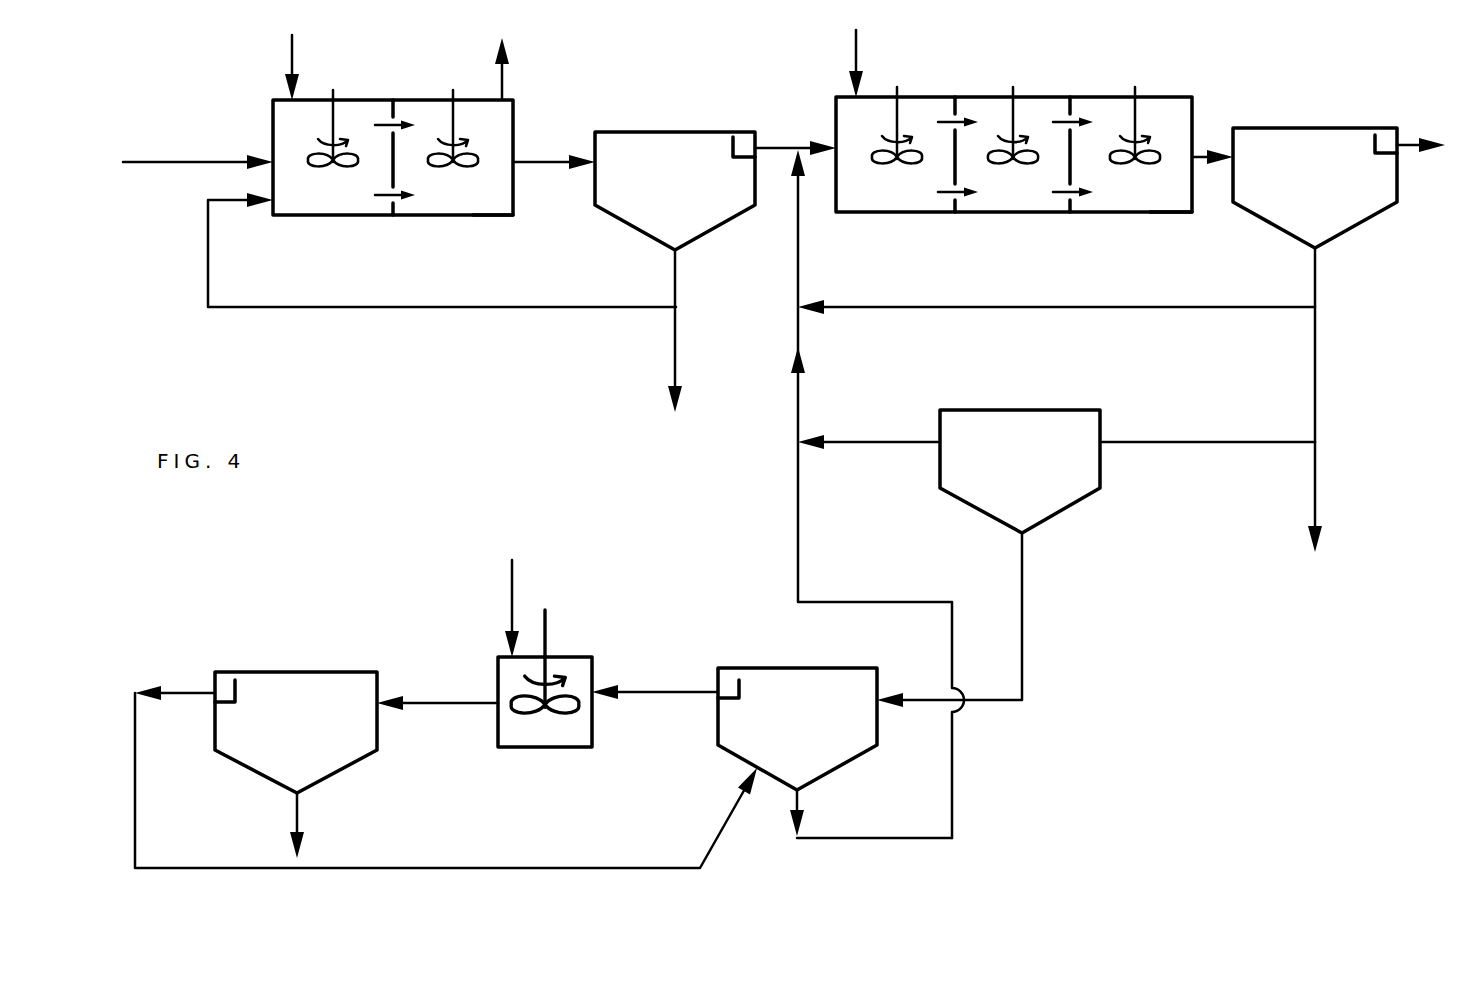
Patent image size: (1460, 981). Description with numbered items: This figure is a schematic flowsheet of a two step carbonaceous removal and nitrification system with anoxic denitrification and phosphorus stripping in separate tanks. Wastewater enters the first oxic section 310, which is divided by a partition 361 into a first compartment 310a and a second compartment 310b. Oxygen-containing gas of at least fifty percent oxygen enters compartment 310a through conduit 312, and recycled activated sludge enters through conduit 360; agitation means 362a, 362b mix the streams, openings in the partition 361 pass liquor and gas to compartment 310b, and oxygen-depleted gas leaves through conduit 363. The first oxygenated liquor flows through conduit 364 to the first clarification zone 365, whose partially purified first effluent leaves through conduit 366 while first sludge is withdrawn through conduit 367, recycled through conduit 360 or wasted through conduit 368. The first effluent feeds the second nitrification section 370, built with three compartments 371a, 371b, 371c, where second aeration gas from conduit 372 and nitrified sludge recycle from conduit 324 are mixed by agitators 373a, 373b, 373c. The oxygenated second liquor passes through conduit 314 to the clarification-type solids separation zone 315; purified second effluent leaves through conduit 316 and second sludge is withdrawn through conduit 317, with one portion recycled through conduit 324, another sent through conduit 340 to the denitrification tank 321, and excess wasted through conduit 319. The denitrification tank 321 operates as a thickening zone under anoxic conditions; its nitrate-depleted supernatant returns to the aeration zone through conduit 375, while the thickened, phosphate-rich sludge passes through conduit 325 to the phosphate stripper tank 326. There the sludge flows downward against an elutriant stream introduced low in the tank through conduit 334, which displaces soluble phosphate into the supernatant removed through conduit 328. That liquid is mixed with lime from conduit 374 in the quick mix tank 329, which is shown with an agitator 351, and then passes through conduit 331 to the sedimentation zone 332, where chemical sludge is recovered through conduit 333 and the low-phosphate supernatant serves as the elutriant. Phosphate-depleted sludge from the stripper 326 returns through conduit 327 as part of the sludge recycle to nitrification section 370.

The first oxic section 310 is at (393, 74).
The first compartment 310a is at (332, 217).
The second compartment 310b is at (434, 217).
The conduit 312 is at (293, 56).
The partition 361 is at (393, 146).
The agitation means 362a is at (333, 122).
The agitation means 362b is at (458, 148).
The conduit 363 is at (505, 83).
The conduit 364 is at (541, 163).
The first clarification zone 365 is at (723, 130).
The conduit 366 is at (774, 147).
The conduit 367 is at (677, 277).
The conduit 368 is at (675, 355).
The conduit 360 is at (208, 275).
The second nitrification section 370 is at (994, 76).
The first compartment 371a is at (871, 214).
The second compartment 371b is at (988, 214).
The third compartment 371c is at (1096, 214).
The conduit 372 is at (857, 54).
The agitator 373a is at (897, 128).
The agitator 373b is at (1015, 118).
The agitator 373c is at (1137, 115).
The conduit 314 is at (1203, 150).
The clarification-type solids separation zone 315 is at (1270, 229).
The conduit 316 is at (1406, 140).
The conduit 317 is at (1318, 286).
The conduit 319 is at (1316, 490).
The conduit 340 is at (1205, 441).
The denitrification tank 321 is at (1069, 409).
The conduit 375 is at (856, 441).
The conduit 324 is at (799, 262).
The conduit 325 is at (986, 699).
The phosphate stripper tank 326 is at (773, 778).
The conduit 327 is at (873, 838).
The conduit 328 is at (646, 693).
The quick mix tank 329 is at (552, 748).
The agitator 351 is at (527, 732).
The conduit 374 is at (511, 607).
The conduit 331 is at (432, 702).
The sedimentation zone 332 is at (357, 757).
The conduit 333 is at (298, 815).
The conduit 334 is at (714, 842).